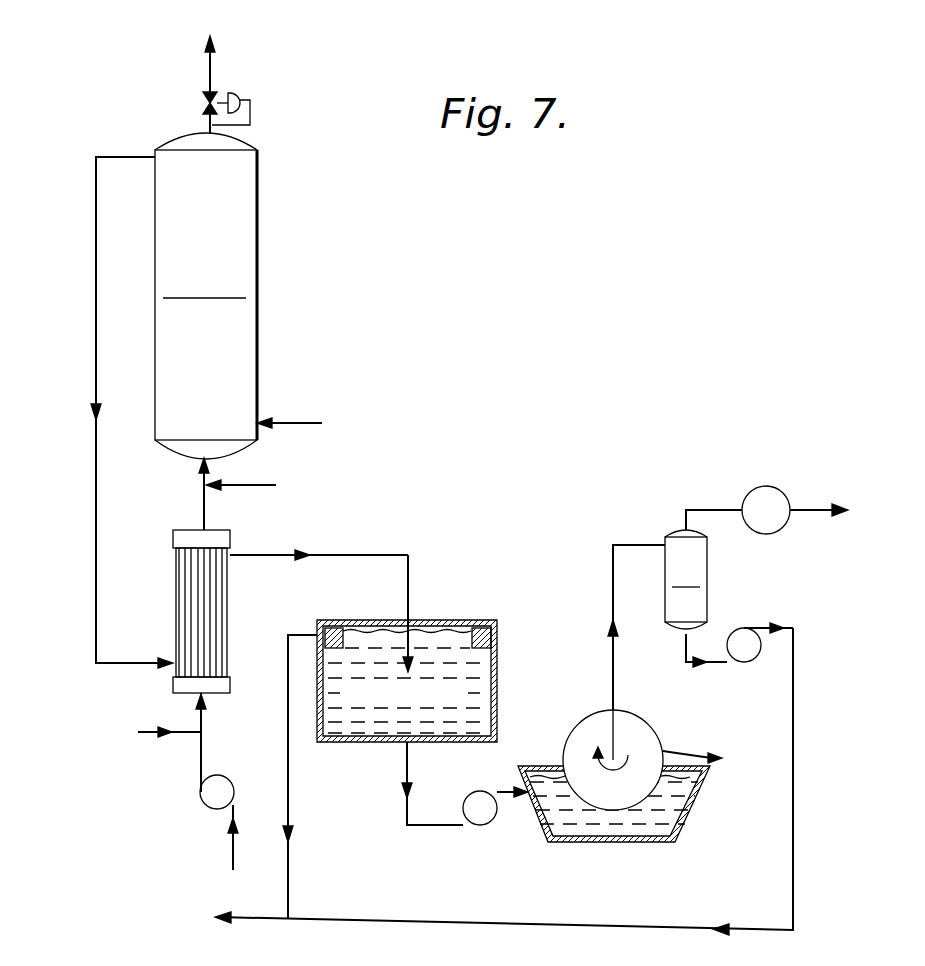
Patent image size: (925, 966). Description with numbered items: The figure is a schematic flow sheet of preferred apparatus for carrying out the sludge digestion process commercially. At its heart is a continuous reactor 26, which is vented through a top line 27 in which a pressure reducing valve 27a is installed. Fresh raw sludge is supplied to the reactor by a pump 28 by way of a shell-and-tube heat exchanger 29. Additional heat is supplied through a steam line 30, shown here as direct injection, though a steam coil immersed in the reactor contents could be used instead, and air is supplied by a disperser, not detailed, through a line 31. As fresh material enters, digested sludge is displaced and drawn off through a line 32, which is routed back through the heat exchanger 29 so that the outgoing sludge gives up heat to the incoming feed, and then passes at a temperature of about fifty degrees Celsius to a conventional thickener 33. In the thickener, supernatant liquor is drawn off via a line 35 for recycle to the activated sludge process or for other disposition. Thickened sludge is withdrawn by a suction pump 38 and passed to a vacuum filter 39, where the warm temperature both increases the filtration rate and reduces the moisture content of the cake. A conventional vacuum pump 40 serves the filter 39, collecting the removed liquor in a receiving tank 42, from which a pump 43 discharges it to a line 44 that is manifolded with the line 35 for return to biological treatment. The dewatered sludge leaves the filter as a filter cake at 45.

The continuous reactor 26 is at (245, 243).
The top line 27 is at (212, 70).
The pressure reducing valve 27a is at (252, 94).
The pump 28 is at (220, 790).
The shell-and-tube heat exchanger 29 is at (174, 592).
The steam line 30 is at (240, 487).
The line 31 is at (298, 422).
The line 32 is at (96, 362).
The thickener 33 is at (497, 665).
The line 35 is at (289, 800).
The suction pump 38 is at (480, 790).
The vacuum filter 39 is at (700, 810).
The vacuum pump 40 is at (784, 526).
The receiving tank 42 is at (710, 620).
The pump 43 is at (746, 658).
The line 44 is at (793, 851).
The filter cake discharge 45 is at (689, 757).